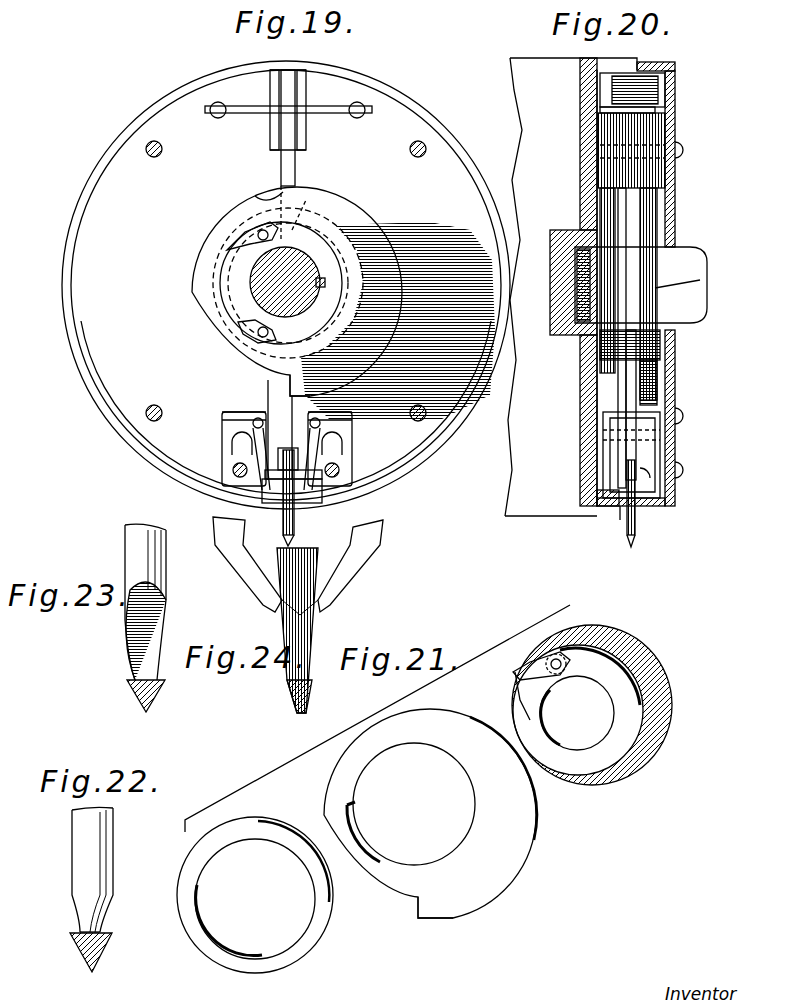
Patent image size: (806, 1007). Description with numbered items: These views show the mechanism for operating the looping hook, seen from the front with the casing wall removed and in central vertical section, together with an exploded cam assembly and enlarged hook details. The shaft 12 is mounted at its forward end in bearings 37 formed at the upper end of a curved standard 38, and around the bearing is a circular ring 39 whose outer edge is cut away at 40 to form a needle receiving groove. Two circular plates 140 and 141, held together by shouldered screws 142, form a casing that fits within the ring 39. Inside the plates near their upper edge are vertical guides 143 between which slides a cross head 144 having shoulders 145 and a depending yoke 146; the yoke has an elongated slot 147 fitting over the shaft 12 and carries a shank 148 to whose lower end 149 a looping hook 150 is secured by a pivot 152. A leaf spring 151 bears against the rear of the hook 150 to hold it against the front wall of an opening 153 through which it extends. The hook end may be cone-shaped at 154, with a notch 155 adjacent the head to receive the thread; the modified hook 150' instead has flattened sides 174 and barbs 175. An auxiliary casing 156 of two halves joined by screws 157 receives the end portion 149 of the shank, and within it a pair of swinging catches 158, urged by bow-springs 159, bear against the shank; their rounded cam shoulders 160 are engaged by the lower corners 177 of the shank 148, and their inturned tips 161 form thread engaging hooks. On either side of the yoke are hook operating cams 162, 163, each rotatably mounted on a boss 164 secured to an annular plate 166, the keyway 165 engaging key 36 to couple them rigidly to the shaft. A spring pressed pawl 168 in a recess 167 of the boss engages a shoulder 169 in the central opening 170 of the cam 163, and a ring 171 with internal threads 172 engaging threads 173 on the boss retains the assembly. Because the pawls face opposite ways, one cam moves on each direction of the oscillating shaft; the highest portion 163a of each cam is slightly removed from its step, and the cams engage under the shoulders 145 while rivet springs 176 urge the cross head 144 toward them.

In FIG. 19, the shaft 12 is at (283, 318).
In FIG. 20, the shaft 12 is at (700, 252).
In FIG. 19, the key 36 is at (326, 282).
In FIG. 20, the bearings 37 is at (568, 338).
In FIG. 20, the standard 38 is at (545, 512).
In FIG. 19, the ring 39 is at (428, 115).
In FIG. 20, the ring 39 is at (637, 62).
In FIG. 19, the needle receiving groove 40 is at (452, 147).
In FIG. 20, the needle receiving groove 40 is at (672, 66).
In FIG. 20, the circular plate 140 is at (590, 195).
In FIG. 20, the circular plate 141 is at (665, 350).
In FIG. 19, the shouldered screws 142 is at (418, 158).
In FIG. 20, the shouldered screws 142 is at (680, 150).
In FIG. 19, the vertical guides 143 is at (300, 92).
In FIG. 20, the vertical guides 143 is at (662, 92).
In FIG. 19, the cross head 144 is at (281, 165).
In FIG. 20, the cross head 144 is at (660, 128).
In FIG. 19, the shoulders 145 is at (258, 194).
In FIG. 20, the shoulders 145 is at (626, 198).
In FIG. 19, the yoke 146 is at (304, 200).
In FIG. 20, the yoke 146 is at (648, 222).
In FIG. 19, the slot 147 is at (352, 302).
In FIG. 20, the slot 147 is at (700, 280).
In FIG. 19, the shank 148 is at (268, 392).
In FIG. 20, the shank 148 is at (626, 390).
In FIG. 20, the lower end 149 is at (636, 442).
In FIG. 19, the looping hook 150 is at (308, 498).
In FIG. 20, the looping hook 150 is at (675, 497).
In FIG. 22, the looping hook 150 is at (117, 869).
In FIG. 23, the modified looping hook 150' is at (123, 602).
In FIG. 20, the leaf spring 151 is at (605, 486).
In FIG. 19, the pivot 152 is at (352, 450).
In FIG. 20, the opening 153 is at (620, 512).
In FIG. 20, the cone-shaped end 154 is at (634, 540).
In FIG. 22, the cone-shaped end 154 is at (106, 948).
In FIG. 22, the notch 155 is at (102, 928).
In FIG. 19, the auxiliary casing 156 is at (252, 422).
In FIG. 20, the auxiliary casing 156 is at (605, 444).
In FIG. 19, the screws 157 is at (233, 466).
In FIG. 20, the screws 157 is at (670, 486).
In FIG. 19, the swinging catches 158 is at (255, 432).
In FIG. 24, the swinging catches 158 is at (215, 534).
In FIG. 19, the bow-springs 159 is at (232, 445).
In FIG. 19, the cam shoulders 160 is at (286, 450).
In FIG. 19, the thread engaging hooks 161 is at (278, 486).
In FIG. 24, the thread engaging hooks 161 is at (312, 612).
In FIG. 19, the hook operating cam 162 is at (398, 321).
In FIG. 20, the hook operating cam 162 is at (657, 392).
In FIG. 19, the hook operating cam 163 is at (362, 195).
In FIG. 20, the hook operating cam 163 is at (600, 214).
In FIG. 21, the hook operating cam 163 is at (530, 834).
In FIG. 19, the highest portion of cam 163a is at (318, 178).
In FIG. 21, the highest portion of cam 163a is at (450, 918).
In FIG. 21, the boss 164 is at (640, 705).
In FIG. 21, the keyway 165 is at (612, 712).
In FIG. 21, the annular plate 166 is at (650, 660).
In FIG. 21, the recess 167 is at (518, 688).
In FIG. 19, the pawl 168 is at (238, 240).
In FIG. 21, the pawl 168 is at (535, 664).
In FIG. 19, the shoulder 169 is at (238, 304).
In FIG. 21, the shoulder 169 is at (356, 810).
In FIG. 21, the central opening 170 is at (475, 806).
In FIG. 20, the ring 171 is at (600, 290).
In FIG. 21, the ring 171 is at (326, 912).
In FIG. 21, the internal screw threads 172 is at (235, 955).
In FIG. 21, the threads 173 is at (605, 650).
In FIG. 23, the flattened sides 174 is at (128, 638).
In FIG. 24, the flattened sides 174 is at (285, 632).
In FIG. 23, the barbs 175 is at (128, 683).
In FIG. 24, the barbs 175 is at (292, 690).
In FIG. 19, the rivet springs 176 is at (238, 108).
In FIG. 20, the rivet springs 176 is at (600, 108).
In FIG. 19, the lower corners 177 is at (262, 480).